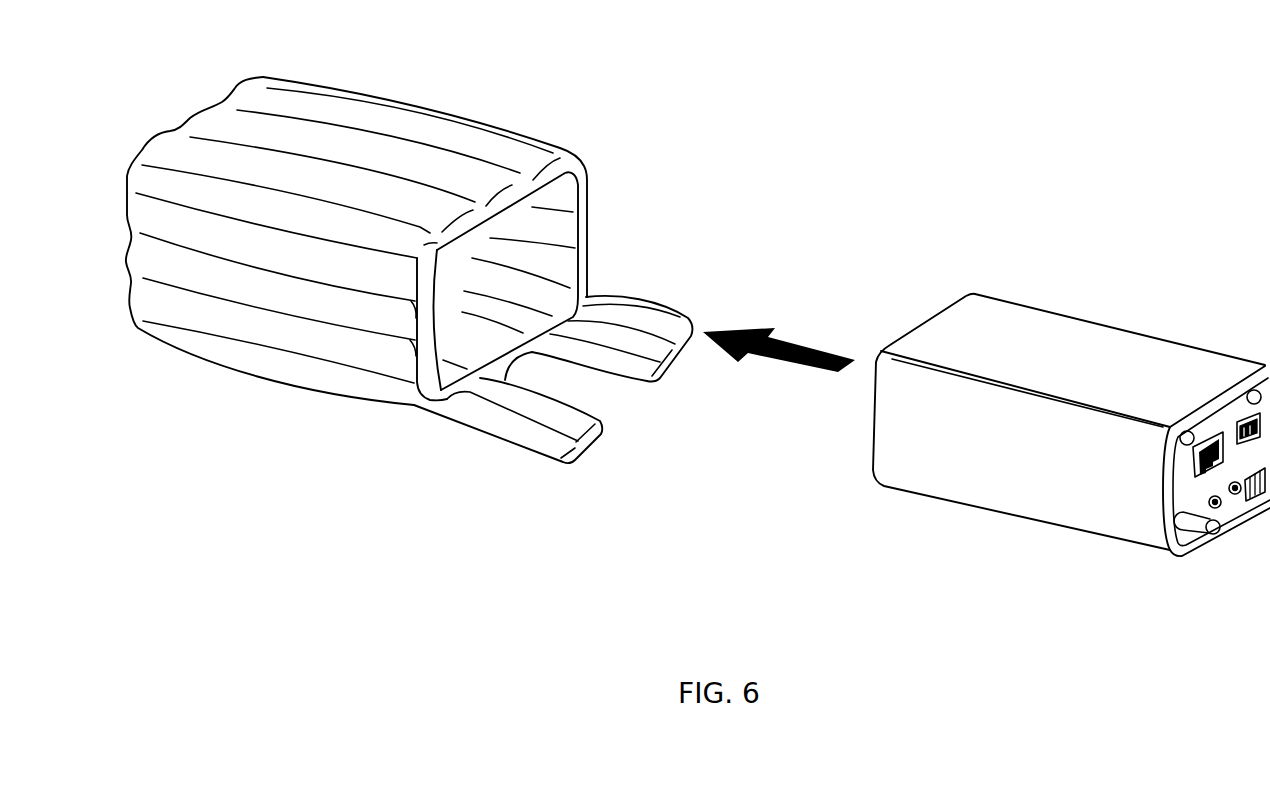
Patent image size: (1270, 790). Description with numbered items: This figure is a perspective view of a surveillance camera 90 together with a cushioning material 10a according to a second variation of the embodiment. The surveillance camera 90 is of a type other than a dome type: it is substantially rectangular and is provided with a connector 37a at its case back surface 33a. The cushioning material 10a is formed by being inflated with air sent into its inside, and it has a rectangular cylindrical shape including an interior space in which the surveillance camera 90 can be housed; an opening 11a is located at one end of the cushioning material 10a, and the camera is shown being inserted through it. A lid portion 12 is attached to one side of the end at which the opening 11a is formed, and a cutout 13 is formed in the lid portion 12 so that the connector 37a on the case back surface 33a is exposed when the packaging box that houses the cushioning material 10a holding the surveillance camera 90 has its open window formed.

The cushioning material 10a is at (437, 102).
The opening 11a is at (552, 222).
The lid portion 12 is at (646, 296).
The cutout 13 is at (613, 390).
The surveillance camera 90 is at (1103, 322).
The case back surface 33a is at (1184, 490).
The connector 37a is at (1208, 437).